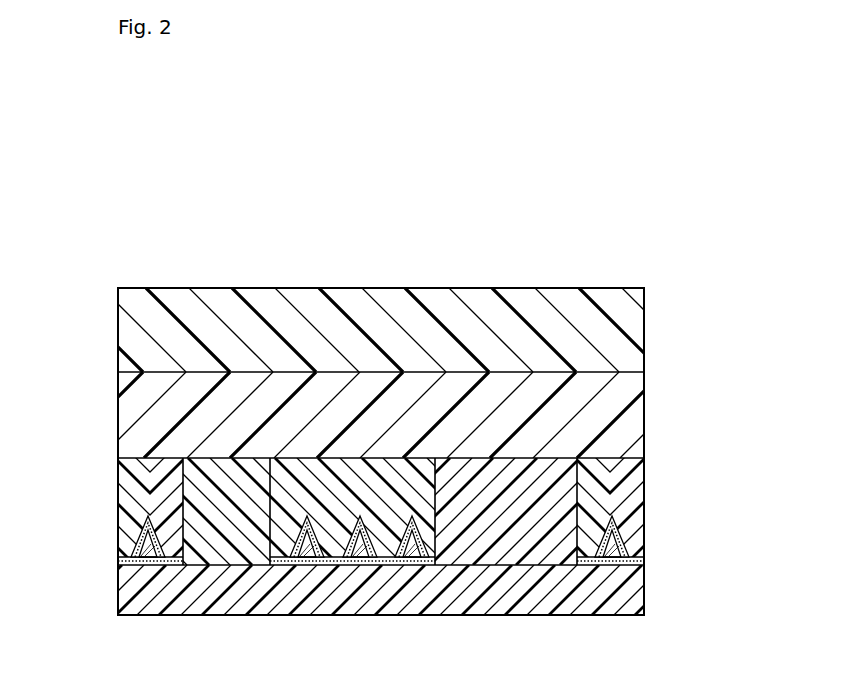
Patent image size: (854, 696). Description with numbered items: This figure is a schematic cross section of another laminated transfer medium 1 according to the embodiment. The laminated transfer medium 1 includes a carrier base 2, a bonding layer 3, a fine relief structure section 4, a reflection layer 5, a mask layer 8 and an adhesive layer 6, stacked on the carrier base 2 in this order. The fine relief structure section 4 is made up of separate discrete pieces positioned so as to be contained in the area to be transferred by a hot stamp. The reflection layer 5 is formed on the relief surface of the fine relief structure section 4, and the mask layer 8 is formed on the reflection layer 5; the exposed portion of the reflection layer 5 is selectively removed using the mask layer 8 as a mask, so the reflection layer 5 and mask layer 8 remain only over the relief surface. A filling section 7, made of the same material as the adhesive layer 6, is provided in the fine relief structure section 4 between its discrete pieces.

The laminated transfer medium 1 is at (551, 234).
The carrier base 2 is at (622, 330).
The bonding layer 3 is at (622, 420).
The fine relief structure section 4 is at (138, 503).
The reflection layer 5 is at (337, 550).
The adhesive layer 6 is at (618, 602).
The filling section 7 is at (223, 540).
The mask layer 8 is at (397, 545).